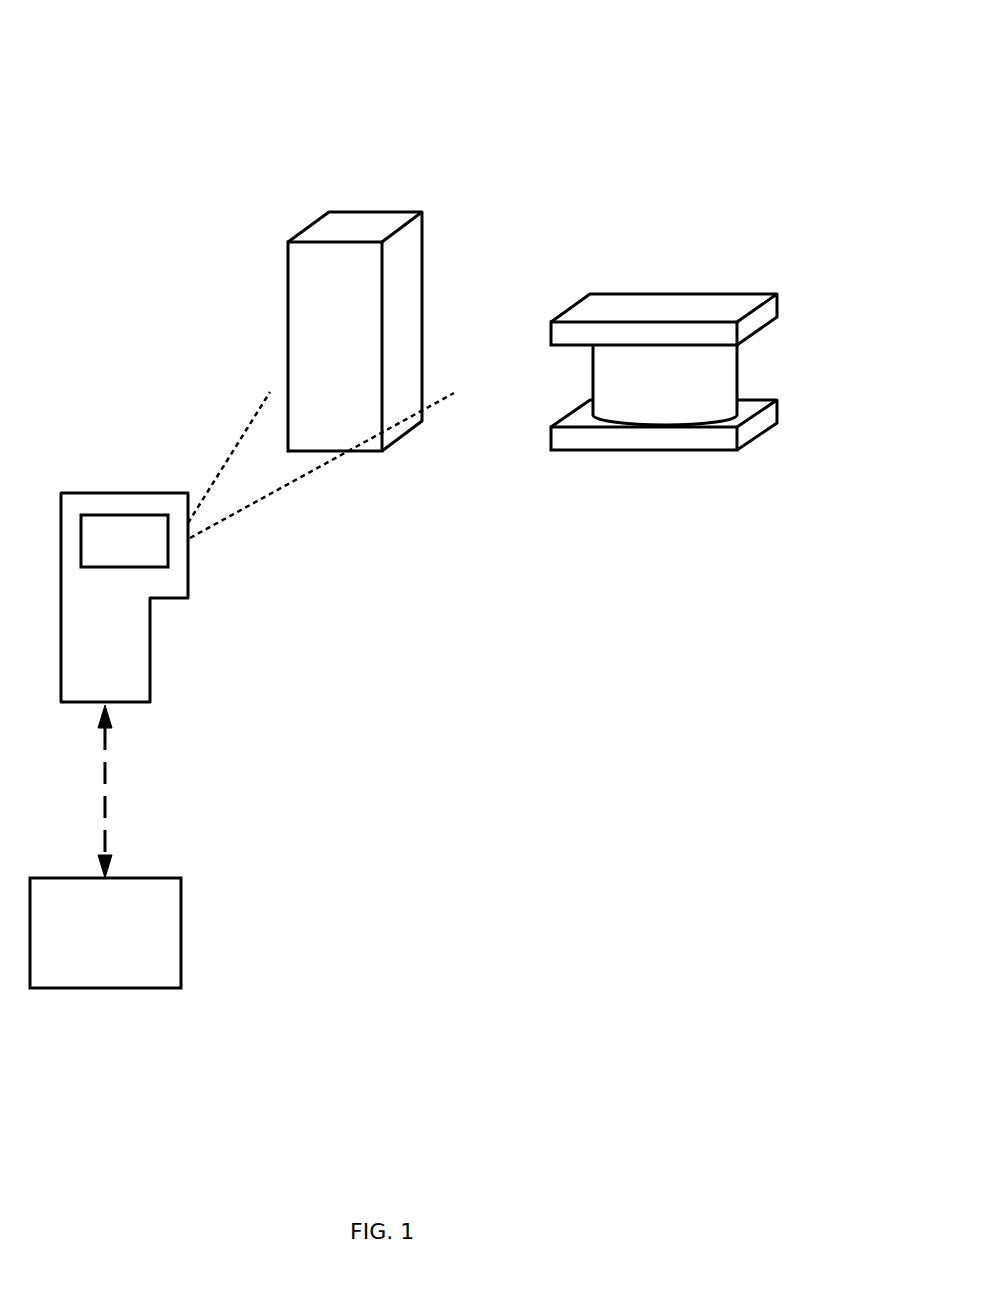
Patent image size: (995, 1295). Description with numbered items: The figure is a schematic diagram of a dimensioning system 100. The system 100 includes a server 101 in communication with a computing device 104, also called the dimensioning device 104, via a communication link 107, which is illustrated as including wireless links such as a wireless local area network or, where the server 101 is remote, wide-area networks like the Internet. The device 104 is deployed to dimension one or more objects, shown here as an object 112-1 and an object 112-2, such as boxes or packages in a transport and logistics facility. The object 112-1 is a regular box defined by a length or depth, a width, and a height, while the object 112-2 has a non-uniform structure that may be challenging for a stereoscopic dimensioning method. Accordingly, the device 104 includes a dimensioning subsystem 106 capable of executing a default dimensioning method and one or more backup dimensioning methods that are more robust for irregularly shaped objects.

The dimensioning system 100 is at (226, 90).
The server 101 is at (126, 931).
The computing device 104 is at (123, 658).
The dimensioning subsystem 106 is at (123, 515).
The communication link 107 is at (125, 791).
The object 112-1 is at (423, 250).
The object 112-2 is at (777, 310).